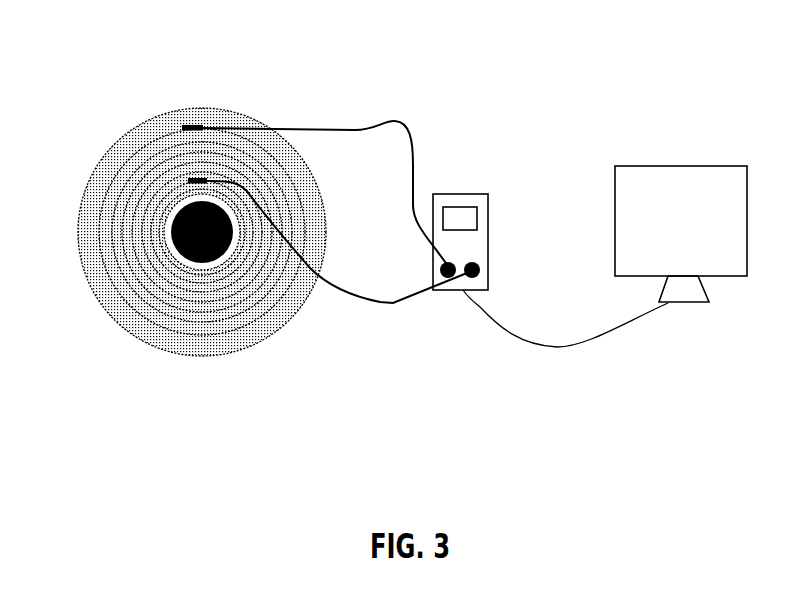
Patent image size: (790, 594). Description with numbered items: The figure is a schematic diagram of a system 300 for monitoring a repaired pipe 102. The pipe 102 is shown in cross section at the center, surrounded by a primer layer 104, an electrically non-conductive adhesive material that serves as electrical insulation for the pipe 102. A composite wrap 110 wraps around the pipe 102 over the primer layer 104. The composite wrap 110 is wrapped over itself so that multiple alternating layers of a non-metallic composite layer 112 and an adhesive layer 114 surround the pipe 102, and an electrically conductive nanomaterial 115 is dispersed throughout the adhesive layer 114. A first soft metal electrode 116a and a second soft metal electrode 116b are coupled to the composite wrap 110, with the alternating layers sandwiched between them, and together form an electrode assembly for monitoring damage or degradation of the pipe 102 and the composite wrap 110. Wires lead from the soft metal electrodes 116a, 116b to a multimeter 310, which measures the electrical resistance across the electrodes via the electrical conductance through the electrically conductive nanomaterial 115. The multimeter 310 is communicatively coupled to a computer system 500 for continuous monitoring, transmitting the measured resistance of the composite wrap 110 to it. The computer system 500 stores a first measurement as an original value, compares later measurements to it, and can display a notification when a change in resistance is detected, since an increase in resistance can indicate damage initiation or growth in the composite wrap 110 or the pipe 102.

The system 300 is at (428, 504).
The composite wrap 110 is at (266, 106).
The electrically conductive nanomaterial 115 is at (94, 231).
The non-metallic composite layer 112 is at (318, 197).
The adhesive layer 114 is at (310, 246).
The primer layer 104 is at (165, 243).
The pipe 102 is at (233, 232).
The first soft metal electrode 116a is at (192, 181).
The second soft metal electrode 116b is at (190, 128).
The multimeter 310 is at (472, 173).
The computer system 500 is at (700, 236).